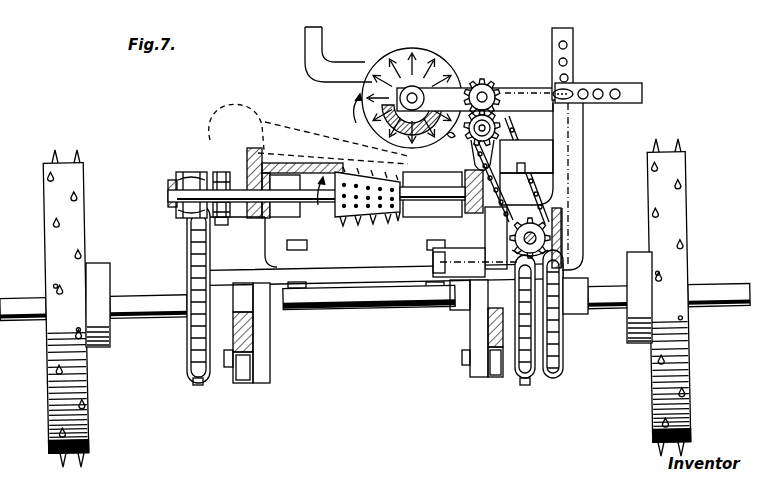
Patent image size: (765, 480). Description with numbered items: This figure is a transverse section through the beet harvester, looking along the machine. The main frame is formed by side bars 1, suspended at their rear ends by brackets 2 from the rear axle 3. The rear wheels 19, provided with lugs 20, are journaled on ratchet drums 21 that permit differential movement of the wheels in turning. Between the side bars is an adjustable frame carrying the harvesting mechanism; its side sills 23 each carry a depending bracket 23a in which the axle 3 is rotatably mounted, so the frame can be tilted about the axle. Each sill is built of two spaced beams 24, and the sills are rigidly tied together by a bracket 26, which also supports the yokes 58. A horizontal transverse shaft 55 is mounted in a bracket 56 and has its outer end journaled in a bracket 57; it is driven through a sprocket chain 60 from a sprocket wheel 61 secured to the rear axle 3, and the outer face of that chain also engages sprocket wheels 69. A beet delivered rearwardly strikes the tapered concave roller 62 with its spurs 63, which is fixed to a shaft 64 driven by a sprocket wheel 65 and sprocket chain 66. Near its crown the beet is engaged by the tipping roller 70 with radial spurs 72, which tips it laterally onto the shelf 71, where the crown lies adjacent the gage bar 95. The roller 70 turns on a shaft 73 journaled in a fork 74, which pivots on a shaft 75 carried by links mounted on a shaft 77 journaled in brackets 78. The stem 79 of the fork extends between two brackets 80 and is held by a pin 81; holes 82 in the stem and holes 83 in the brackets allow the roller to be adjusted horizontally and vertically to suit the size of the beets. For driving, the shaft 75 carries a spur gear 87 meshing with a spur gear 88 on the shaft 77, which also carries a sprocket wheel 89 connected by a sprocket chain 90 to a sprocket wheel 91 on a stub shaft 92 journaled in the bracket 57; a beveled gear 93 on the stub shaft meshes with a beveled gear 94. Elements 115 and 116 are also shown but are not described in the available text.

The side bars 1 is at (245, 364).
The brackets 2 is at (275, 361).
The rear axle 3 is at (124, 315).
The rear wheels 19 is at (84, 421).
The lugs 20 is at (62, 458).
The ratchet drums 21 is at (101, 349).
The side sills 23 is at (290, 212).
The depending bracket 23a is at (278, 315).
The beams 24 is at (261, 216).
The bracket 26 is at (292, 257).
The horizontal transverse shaft 55 is at (440, 250).
The bracket 56 is at (440, 270).
The bracket 57 is at (175, 210).
The yokes 58 is at (583, 152).
The sprocket chain 60 is at (193, 338).
The sprocket wheel 61 is at (190, 252).
The concave roller 62 is at (349, 213).
The spurs 63 is at (374, 216).
The shaft 64 is at (437, 178).
The sprocket wheel 65 is at (223, 221).
The sprocket chain 66 is at (230, 166).
The sprocket wheels 69 is at (188, 172).
The tipping roller 70 is at (411, 57).
The shelf 71 is at (296, 163).
The radial spurs 72 is at (364, 84).
The shaft 73 is at (413, 93).
The fork 74 is at (432, 96).
The shaft 75 is at (489, 84).
The shaft 77 is at (496, 128).
The brackets 78 is at (484, 152).
The outer end portion 79 is at (642, 92).
The brackets 80 is at (554, 30).
The pin 81 is at (571, 89).
The holes 82 is at (600, 89).
The holes 83 is at (567, 45).
The spur gear 87 is at (476, 83).
The spur gear 88 is at (509, 135).
The sprocket wheel 89 is at (453, 140).
The sprocket chain 90 is at (521, 194).
The sprocket wheel 91 is at (560, 258).
The stub shaft 92 is at (536, 238).
The beveled gear 93 is at (578, 270).
The beveled gear 94 is at (541, 253).
The gage bar 95 is at (250, 148).
The bearing block 115 is at (563, 326).
The chain 116 is at (555, 379).